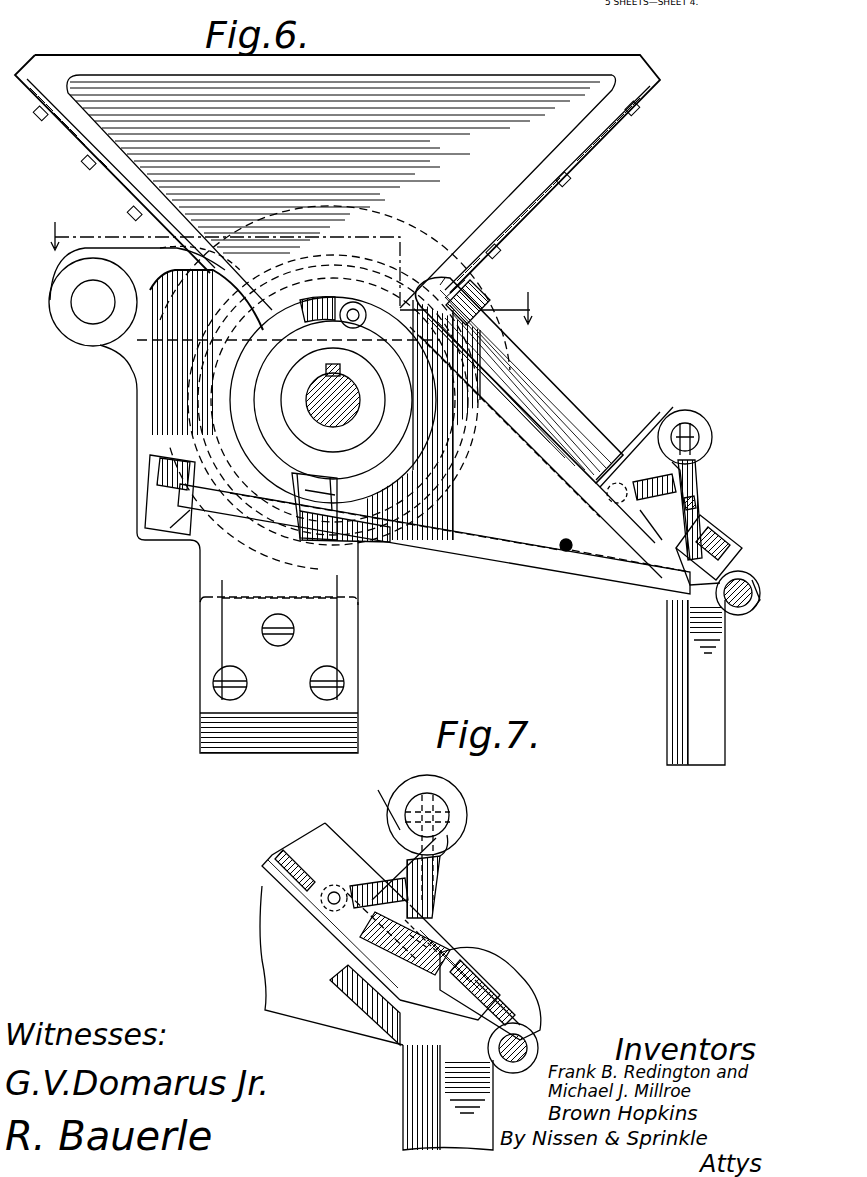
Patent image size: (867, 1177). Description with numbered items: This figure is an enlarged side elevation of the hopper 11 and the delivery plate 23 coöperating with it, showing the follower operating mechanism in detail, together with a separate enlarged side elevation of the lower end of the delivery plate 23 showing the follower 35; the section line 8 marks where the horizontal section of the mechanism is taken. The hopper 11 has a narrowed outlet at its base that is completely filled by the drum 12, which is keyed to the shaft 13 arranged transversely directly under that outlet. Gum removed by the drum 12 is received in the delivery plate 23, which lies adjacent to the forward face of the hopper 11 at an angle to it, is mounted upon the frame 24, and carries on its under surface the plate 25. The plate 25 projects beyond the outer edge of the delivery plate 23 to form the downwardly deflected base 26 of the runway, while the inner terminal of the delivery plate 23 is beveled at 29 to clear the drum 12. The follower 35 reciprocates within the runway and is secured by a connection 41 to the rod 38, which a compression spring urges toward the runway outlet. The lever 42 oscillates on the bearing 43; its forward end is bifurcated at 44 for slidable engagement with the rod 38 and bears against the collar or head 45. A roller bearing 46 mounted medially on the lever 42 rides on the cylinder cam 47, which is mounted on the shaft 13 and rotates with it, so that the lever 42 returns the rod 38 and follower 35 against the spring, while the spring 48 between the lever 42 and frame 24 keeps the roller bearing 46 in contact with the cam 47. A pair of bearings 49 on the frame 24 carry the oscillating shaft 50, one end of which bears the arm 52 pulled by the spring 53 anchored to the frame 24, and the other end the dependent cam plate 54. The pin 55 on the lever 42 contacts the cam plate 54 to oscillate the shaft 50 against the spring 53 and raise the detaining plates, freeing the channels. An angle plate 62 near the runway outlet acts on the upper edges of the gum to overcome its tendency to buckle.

In FIG. 6, the section line 8— 8 is at (292, 275).
In FIG. 6, the hopper 11 is at (505, 170).
In FIG. 6, the drum 12 is at (279, 646).
In FIG. 6, the shaft 13 is at (335, 420).
In FIG. 6, the delivery plate 23 is at (545, 385).
In FIG. 7, the delivery plate 23 is at (305, 845).
In FIG. 6, the frame 24 is at (560, 495).
In FIG. 6, the plate 25 is at (545, 432).
In FIG. 7, the plate 25 is at (290, 870).
In FIG. 7, the base of runway 26 is at (403, 1052).
In FIG. 7, the beveled inner terminal 29 is at (275, 886).
In FIG. 7, the follower 35 is at (468, 958).
In FIG. 6, the rod 38 is at (748, 578).
In FIG. 7, the rod 38 is at (530, 1040).
In FIG. 6, the connection 41 is at (730, 548).
In FIG. 7, the connection 41 is at (520, 980).
In FIG. 6, the lever 42 is at (475, 562).
In FIG. 6, the bearing 43 is at (158, 530).
In FIG. 6, the bifurcated terminal 44 is at (740, 630).
In FIG. 6, the collar or head 45 is at (752, 602).
In FIG. 6, the roller bearing 46 is at (300, 525).
In FIG. 6, the cylinder cam 47 is at (240, 431).
In FIG. 6, the spring 48 is at (563, 540).
In FIG. 6, the bearings 49 is at (665, 418).
In FIG. 7, the bearings 49 is at (385, 805).
In FIG. 6, the shaft 50 is at (690, 430).
In FIG. 7, the shaft 50 is at (438, 812).
In FIG. 6, the arm 52 is at (700, 475).
In FIG. 7, the arm 52 is at (450, 870).
In FIG. 6, the spring 53 is at (618, 504).
In FIG. 7, the spring 53 is at (340, 860).
In FIG. 6, the cam plate 54 is at (692, 455).
In FIG. 7, the cam plate 54 is at (479, 847).
In FIG. 6, the pin 55 is at (650, 520).
In FIG. 6, the angle plate 62 is at (697, 525).